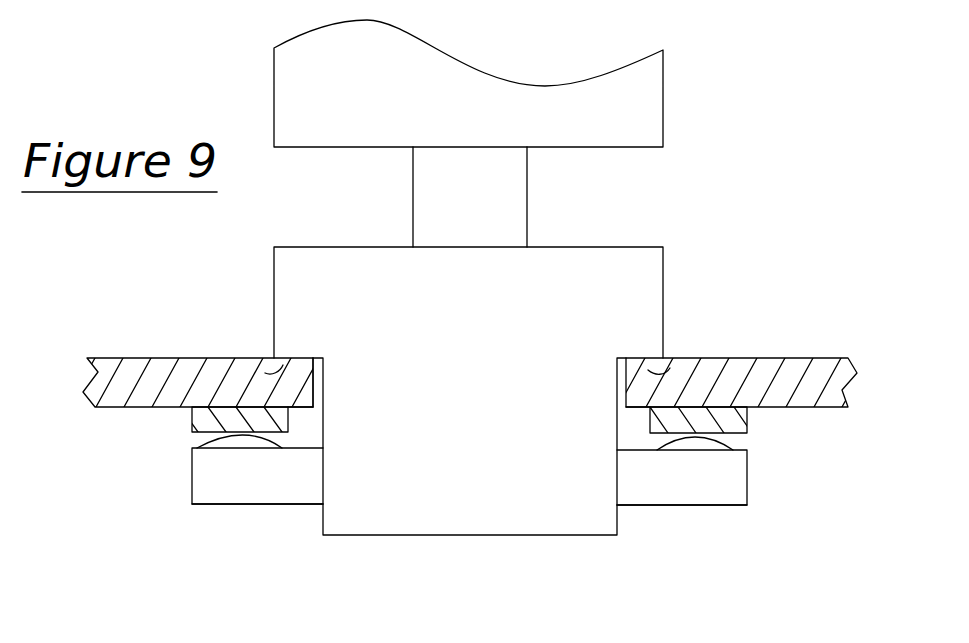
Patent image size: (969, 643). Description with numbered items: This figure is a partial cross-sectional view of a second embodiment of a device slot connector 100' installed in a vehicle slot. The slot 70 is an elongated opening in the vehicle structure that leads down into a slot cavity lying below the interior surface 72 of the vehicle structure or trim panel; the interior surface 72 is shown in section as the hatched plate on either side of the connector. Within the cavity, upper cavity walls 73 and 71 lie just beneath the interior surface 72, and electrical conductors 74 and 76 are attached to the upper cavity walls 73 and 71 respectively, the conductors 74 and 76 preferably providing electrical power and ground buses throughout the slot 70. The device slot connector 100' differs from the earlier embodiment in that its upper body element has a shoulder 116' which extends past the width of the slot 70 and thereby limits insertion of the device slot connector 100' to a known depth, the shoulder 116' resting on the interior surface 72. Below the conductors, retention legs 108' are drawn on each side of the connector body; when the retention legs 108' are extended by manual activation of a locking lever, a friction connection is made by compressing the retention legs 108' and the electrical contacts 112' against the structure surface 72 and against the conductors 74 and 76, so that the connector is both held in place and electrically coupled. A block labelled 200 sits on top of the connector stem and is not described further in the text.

The press head / actuator 200 is at (427, 98).
The device slot connector 100' is at (506, 341).
The interior surface 72 is at (163, 358).
The slot 70 is at (313, 373).
The shoulder 116' is at (469, 331).
The electrical conductor 76 is at (193, 422).
The electrical conductor 74 is at (747, 418).
The electrical contacts 112' is at (473, 469).
The retention legs 108' is at (502, 532).
The upper cavity wall 71 is at (294, 408).
The upper cavity wall 73 is at (638, 410).